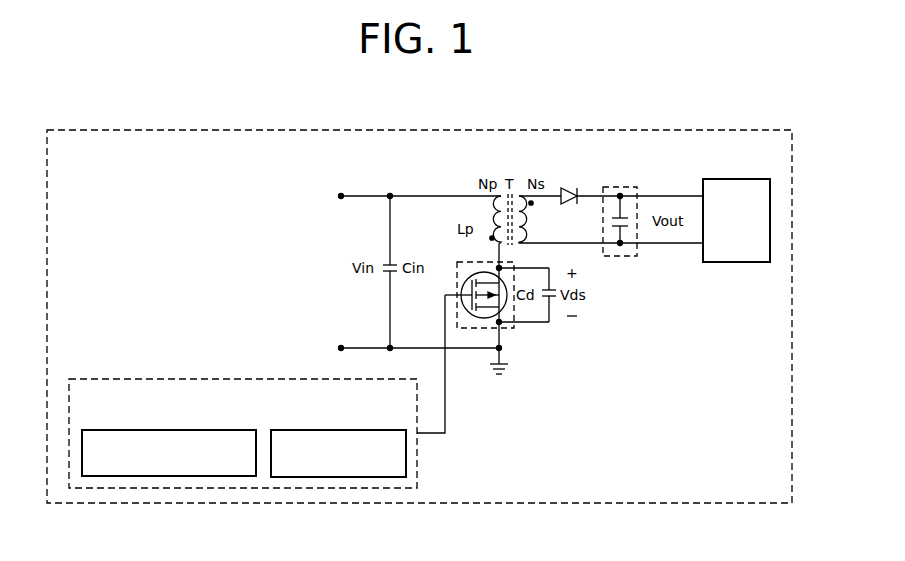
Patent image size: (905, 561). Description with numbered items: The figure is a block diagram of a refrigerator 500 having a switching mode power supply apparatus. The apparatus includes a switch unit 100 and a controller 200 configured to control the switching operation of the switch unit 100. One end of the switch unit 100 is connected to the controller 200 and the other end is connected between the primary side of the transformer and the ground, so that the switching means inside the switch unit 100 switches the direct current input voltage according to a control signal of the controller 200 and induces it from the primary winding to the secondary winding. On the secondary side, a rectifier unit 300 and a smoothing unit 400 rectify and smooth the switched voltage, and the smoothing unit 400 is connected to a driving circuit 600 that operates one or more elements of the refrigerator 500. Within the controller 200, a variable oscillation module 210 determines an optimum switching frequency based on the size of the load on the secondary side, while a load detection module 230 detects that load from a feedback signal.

The switch unit 100 is at (457, 267).
The controller 200 is at (242, 379).
The variable oscillation module 210 is at (170, 430).
The load detection module 230 is at (338, 430).
The rectifier unit 300 is at (569, 189).
The smoothing unit 400 is at (620, 187).
The refrigerator 500 is at (373, 130).
The driving circuit 600 is at (737, 179).